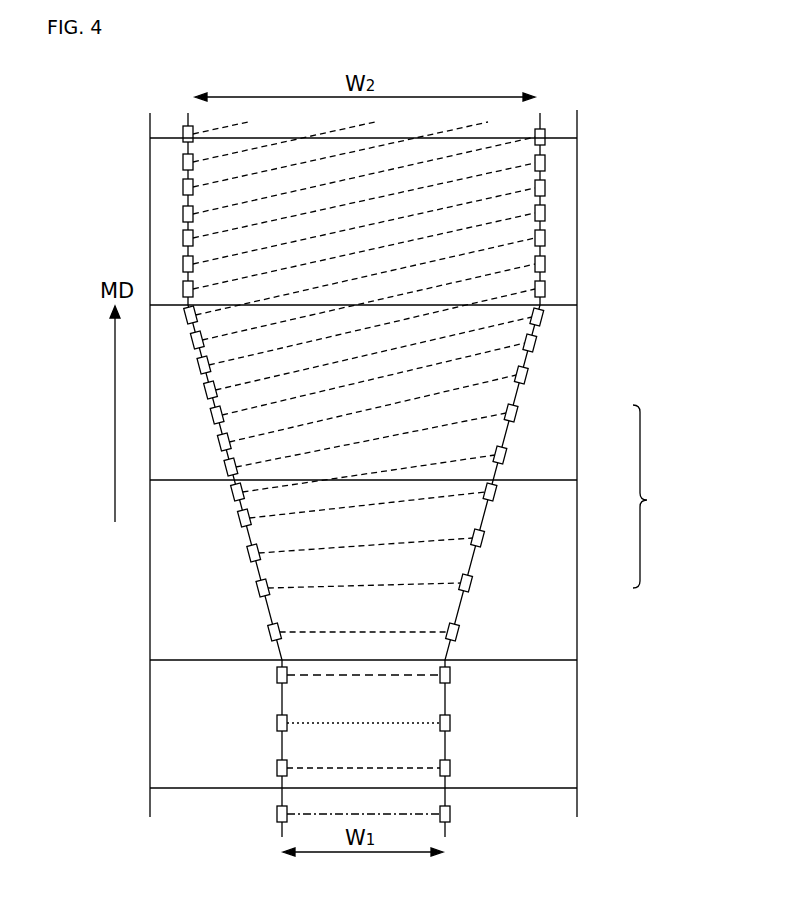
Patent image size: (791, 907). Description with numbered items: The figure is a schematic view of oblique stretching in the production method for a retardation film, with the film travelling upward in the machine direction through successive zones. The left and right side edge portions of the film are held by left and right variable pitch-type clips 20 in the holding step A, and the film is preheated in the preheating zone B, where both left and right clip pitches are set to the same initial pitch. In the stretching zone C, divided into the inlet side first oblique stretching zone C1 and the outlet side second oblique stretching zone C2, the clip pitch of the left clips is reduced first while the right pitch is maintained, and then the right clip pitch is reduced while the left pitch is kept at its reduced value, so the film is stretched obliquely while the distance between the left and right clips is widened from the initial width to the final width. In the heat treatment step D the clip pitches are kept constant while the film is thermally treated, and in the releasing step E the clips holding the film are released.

The clips 20 is at (277, 814).
The holding step A is at (555, 810).
The preheating zone B is at (569, 717).
The stretching zone C is at (652, 496).
The first oblique stretching zone C1 is at (569, 583).
The second oblique stretching zone C2 is at (569, 417).
The heat treatment step D is at (569, 248).
The releasing step E is at (550, 129).